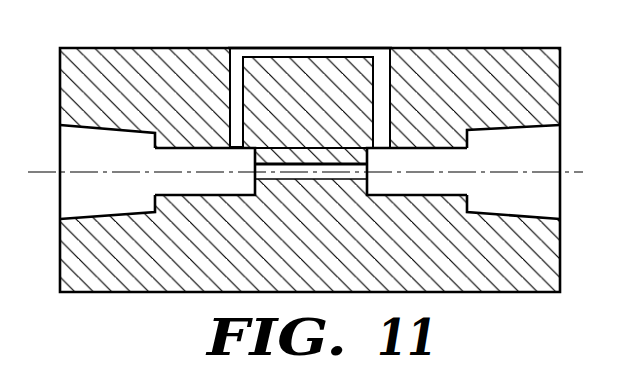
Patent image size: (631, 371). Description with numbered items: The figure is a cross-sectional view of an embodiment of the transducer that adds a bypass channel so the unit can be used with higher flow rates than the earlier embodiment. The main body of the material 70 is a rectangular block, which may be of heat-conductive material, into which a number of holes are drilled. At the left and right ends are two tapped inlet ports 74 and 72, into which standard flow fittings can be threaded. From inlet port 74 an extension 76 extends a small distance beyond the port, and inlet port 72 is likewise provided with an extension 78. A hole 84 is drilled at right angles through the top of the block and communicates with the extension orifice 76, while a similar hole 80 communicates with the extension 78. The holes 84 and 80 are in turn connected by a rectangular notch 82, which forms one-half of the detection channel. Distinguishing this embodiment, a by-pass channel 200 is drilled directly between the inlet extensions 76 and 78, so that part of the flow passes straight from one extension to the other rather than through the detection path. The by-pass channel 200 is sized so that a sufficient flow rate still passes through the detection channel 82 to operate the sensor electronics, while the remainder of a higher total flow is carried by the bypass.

The body of the material 70 is at (82, 239).
The inlet port 72 is at (540, 157).
The inlet port 74 is at (75, 148).
The extension 76 is at (180, 187).
The extension 78 is at (413, 187).
The hole 80 is at (388, 93).
The rectangular notch 82 is at (262, 48).
The hole 84 is at (230, 89).
The by-pass channel 200 is at (279, 176).